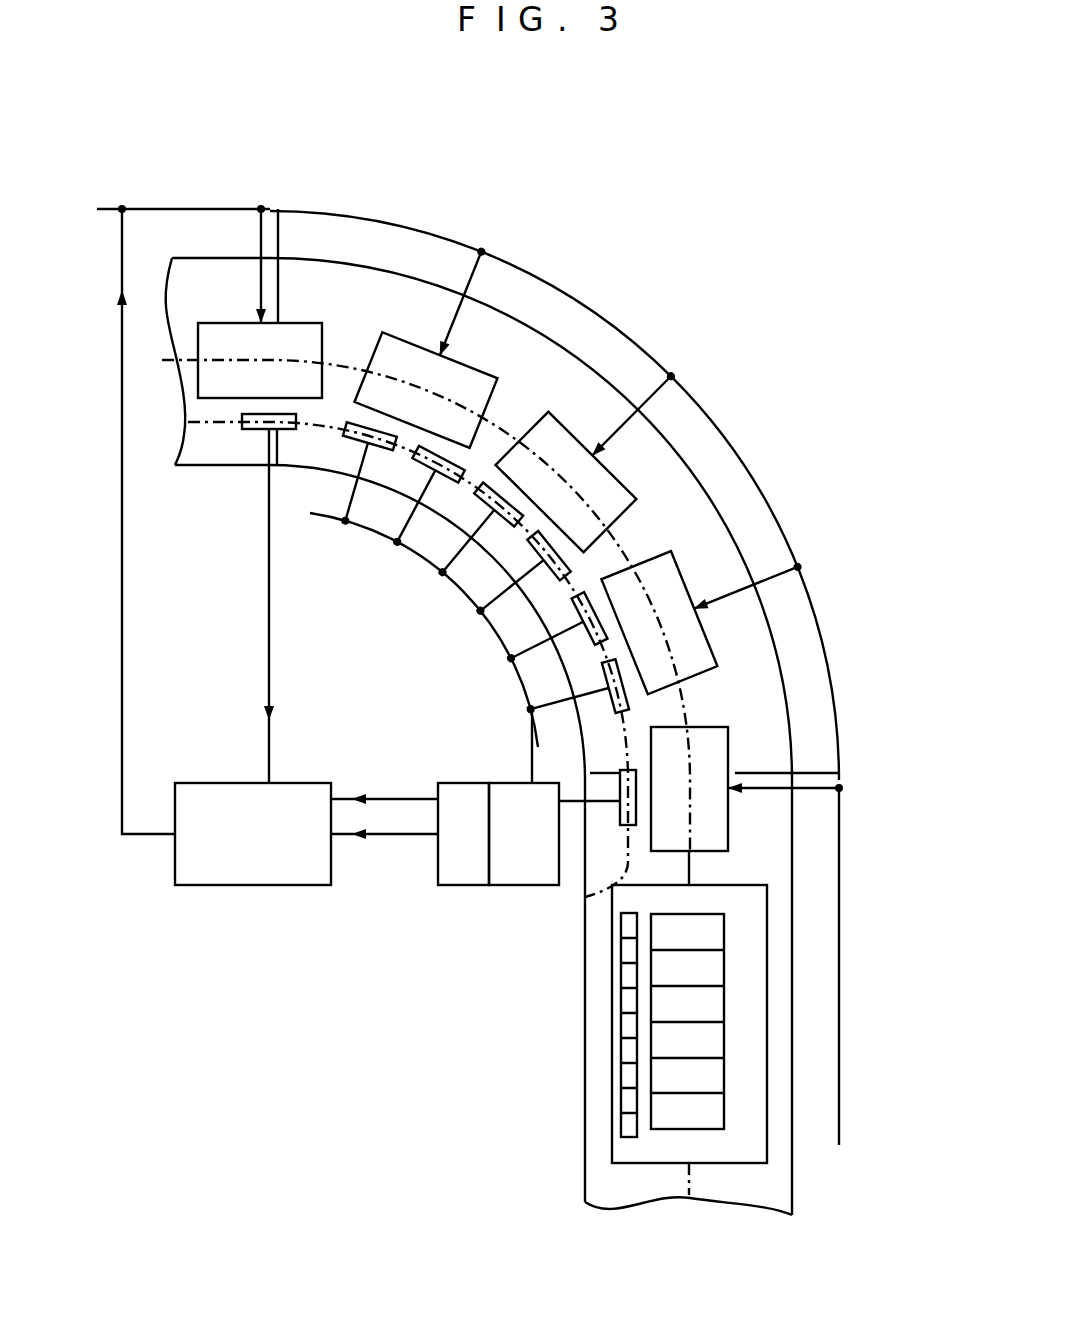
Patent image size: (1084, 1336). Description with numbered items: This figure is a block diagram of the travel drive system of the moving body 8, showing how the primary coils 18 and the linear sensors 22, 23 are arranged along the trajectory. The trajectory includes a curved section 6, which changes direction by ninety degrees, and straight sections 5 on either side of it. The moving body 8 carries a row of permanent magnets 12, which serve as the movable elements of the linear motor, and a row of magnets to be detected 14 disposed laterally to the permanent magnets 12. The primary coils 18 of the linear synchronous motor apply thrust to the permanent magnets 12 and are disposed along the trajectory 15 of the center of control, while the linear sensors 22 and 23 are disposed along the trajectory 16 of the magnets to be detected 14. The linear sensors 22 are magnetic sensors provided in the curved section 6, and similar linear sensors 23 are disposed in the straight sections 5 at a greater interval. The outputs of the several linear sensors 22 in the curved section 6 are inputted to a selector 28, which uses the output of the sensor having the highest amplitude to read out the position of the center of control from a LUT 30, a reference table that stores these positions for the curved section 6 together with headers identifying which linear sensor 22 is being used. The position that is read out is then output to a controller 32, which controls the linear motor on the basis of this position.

The straight section 5 is at (176, 223).
The curved section 6 is at (807, 688).
The moving body 8 is at (750, 1137).
The row of permanent magnets 12 is at (713, 1005).
The row of magnets to be detected 14 is at (623, 1024).
The trajectory of the center of control 15 is at (340, 367).
The trajectory of the magnets to be detected 16 is at (193, 468).
The primary coils 18 is at (292, 332).
The linear sensors 22 is at (347, 438).
The linear sensors 23 is at (255, 427).
The selector 28 is at (527, 885).
The LUT 30 is at (463, 885).
The controller 32 is at (252, 885).